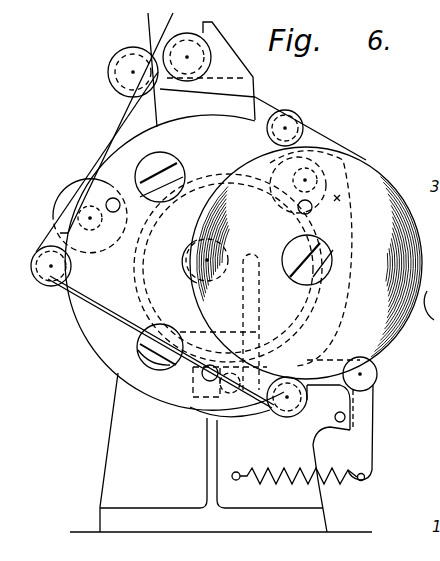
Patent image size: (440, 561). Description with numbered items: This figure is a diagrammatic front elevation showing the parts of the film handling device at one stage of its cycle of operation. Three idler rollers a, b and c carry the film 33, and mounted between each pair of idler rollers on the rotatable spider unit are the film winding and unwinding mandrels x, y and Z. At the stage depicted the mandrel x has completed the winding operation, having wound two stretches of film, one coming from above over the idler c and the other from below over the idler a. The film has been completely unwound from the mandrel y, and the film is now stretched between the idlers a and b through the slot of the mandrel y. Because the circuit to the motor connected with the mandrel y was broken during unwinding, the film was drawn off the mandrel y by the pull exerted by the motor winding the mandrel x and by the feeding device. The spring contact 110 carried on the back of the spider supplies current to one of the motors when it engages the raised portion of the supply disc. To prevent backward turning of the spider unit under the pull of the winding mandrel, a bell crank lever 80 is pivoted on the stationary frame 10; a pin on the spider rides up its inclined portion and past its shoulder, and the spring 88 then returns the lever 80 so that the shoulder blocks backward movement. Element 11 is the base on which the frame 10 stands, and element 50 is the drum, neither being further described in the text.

The frame 10 is at (112, 457).
The base 11 is at (100, 516).
The film 33 is at (123, 118).
The drum 50 is at (290, 272).
The bell crank lever 80 is at (370, 440).
The spring 88 is at (305, 482).
The spring contact 110 is at (198, 180).
The mandrel Z is at (166, 171).
The mandrel x is at (330, 258).
The mandrel y is at (140, 353).
The idler roller a is at (293, 418).
The idler roller b is at (46, 284).
The idler roller c is at (300, 118).